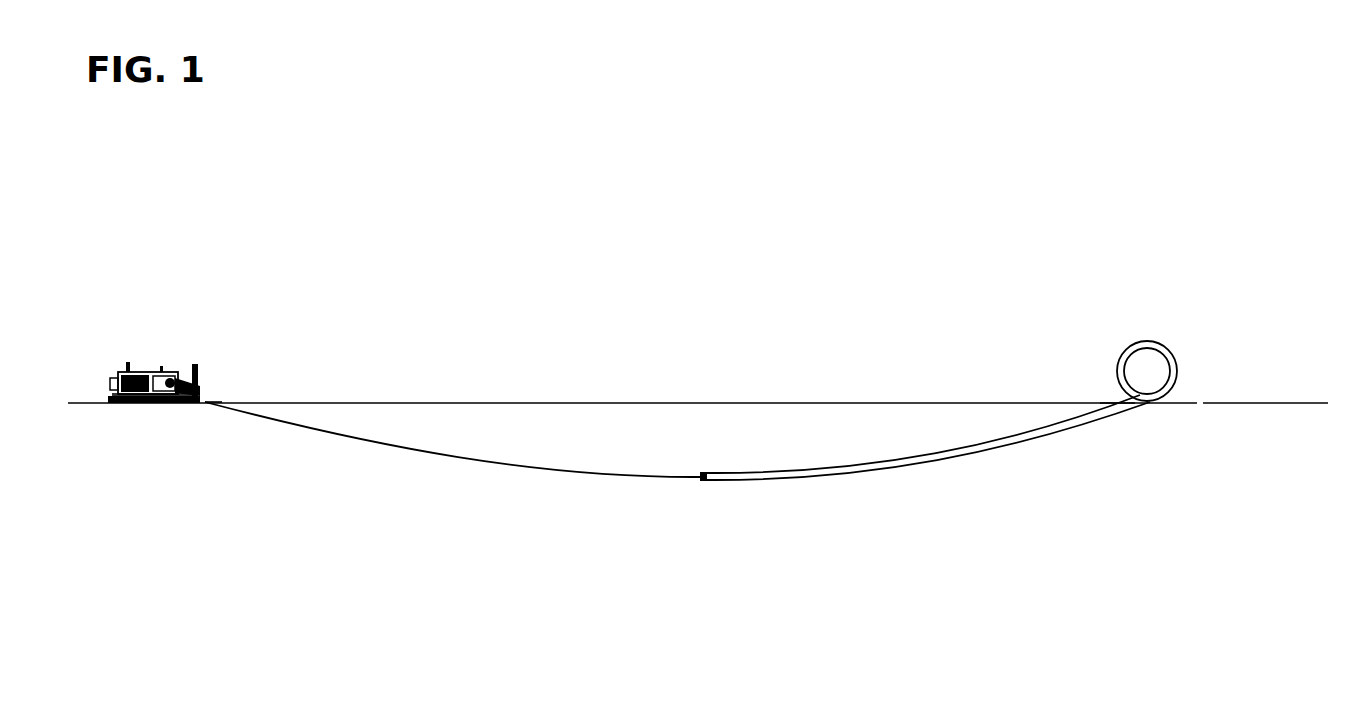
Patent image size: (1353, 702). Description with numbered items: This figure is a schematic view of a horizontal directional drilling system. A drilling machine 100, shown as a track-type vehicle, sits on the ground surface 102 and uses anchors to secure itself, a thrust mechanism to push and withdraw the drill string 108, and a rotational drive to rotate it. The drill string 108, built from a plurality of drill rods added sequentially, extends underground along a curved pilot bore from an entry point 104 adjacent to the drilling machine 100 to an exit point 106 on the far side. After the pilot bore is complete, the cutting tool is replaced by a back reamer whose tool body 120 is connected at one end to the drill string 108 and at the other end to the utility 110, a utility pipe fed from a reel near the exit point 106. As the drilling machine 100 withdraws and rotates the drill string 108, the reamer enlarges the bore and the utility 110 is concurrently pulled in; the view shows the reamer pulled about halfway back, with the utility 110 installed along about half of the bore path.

The drilling machine 100 is at (205, 388).
The ground surface 102 is at (390, 403).
The entry point 104 is at (222, 402).
The exit point 106 is at (1108, 402).
The drill string 108 is at (510, 468).
The utility 110 is at (838, 473).
The tool body 120 is at (700, 485).